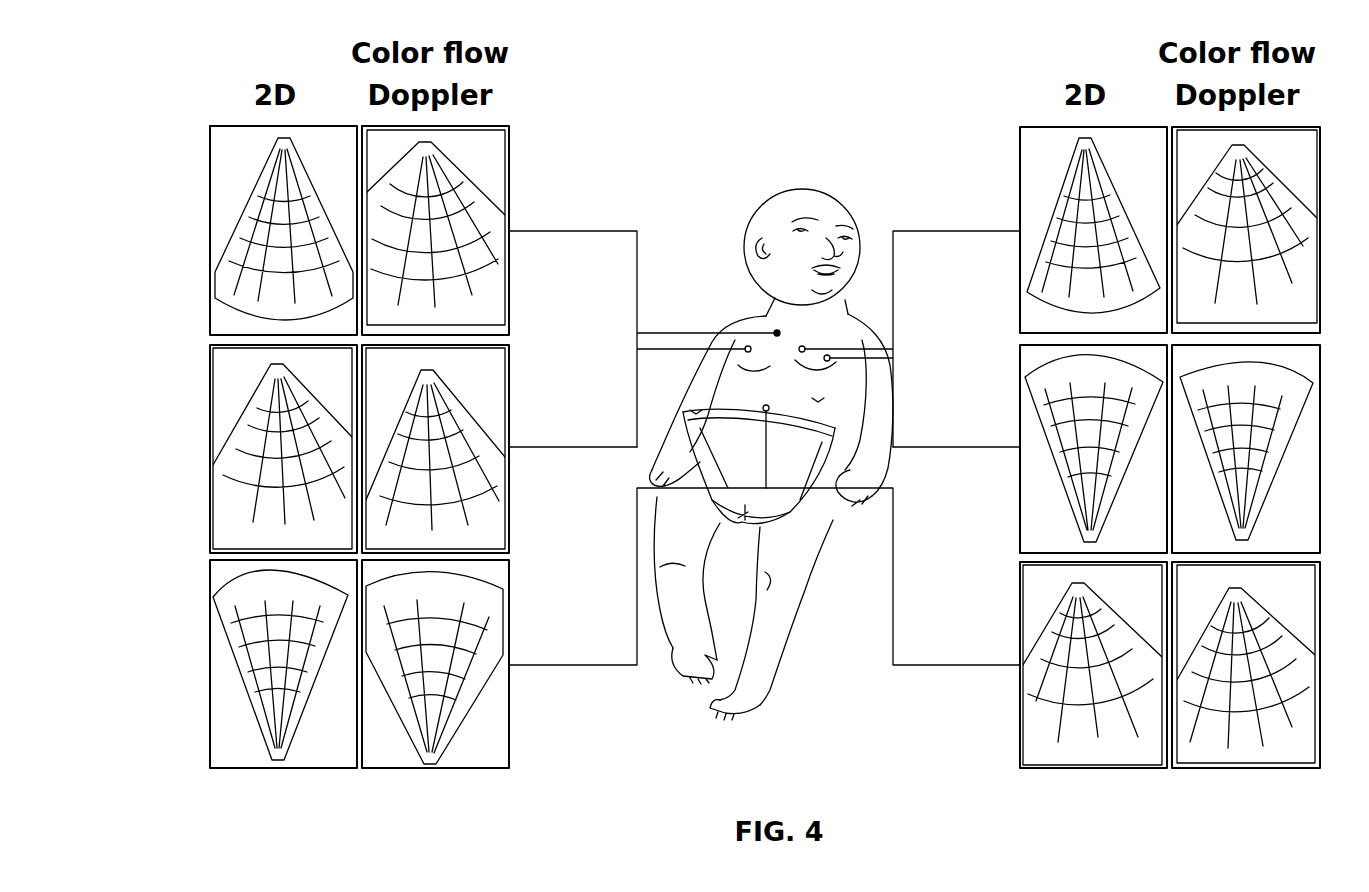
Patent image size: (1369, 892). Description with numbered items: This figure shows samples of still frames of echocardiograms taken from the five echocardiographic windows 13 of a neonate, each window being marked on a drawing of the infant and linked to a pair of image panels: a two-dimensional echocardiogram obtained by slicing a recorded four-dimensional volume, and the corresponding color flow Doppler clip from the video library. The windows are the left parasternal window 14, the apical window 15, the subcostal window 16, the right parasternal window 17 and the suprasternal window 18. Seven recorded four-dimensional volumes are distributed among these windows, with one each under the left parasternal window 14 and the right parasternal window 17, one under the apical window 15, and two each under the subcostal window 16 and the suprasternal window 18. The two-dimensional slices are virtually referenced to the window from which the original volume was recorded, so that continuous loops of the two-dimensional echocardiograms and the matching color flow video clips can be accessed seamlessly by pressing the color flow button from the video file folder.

The echocardiographic windows 13 is at (777, 333).
The left parasternal window 14 is at (934, 231).
The apical window 15 is at (934, 447).
The subcostal window 16 is at (572, 665).
The right parasternal window 17 is at (572, 447).
The suprasternal window 18 is at (572, 230).